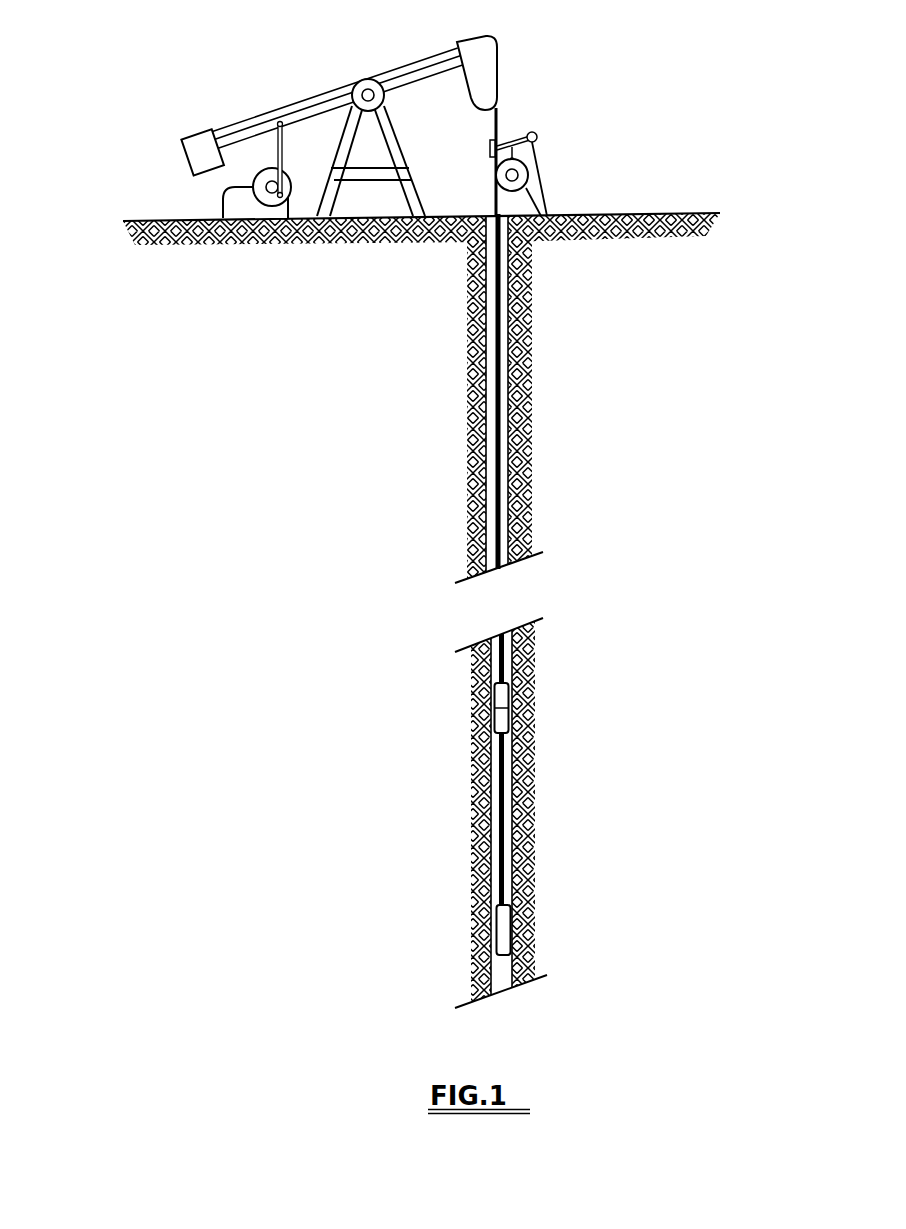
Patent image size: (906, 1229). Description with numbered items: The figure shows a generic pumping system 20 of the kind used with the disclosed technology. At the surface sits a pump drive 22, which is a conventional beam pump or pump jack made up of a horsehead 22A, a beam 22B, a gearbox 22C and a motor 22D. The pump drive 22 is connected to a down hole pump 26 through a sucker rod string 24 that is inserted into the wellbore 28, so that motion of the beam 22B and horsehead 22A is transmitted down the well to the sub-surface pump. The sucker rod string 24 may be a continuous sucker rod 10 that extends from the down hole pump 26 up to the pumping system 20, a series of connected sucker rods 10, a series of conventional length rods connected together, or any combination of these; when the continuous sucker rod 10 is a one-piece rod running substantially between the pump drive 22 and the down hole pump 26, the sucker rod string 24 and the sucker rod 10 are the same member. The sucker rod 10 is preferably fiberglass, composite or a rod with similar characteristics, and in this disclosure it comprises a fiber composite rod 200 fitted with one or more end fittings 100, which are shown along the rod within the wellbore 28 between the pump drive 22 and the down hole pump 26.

The sucker rod 10 is at (462, 683).
The pumping system 20 is at (556, 130).
The pump drive 22 is at (307, 117).
The horsehead 22A is at (490, 62).
The beam 22B is at (360, 82).
The gearbox 22C is at (267, 173).
The motor 22D is at (232, 200).
The sucker rod string 24 is at (531, 490).
The wellbore 28 is at (480, 362).
The down hole pump 26 is at (503, 932).
The end fitting 100 is at (502, 723).
The fiber composite rod 200 is at (498, 392).